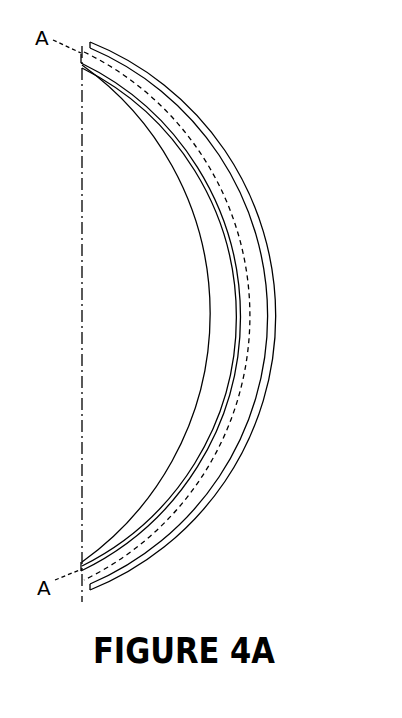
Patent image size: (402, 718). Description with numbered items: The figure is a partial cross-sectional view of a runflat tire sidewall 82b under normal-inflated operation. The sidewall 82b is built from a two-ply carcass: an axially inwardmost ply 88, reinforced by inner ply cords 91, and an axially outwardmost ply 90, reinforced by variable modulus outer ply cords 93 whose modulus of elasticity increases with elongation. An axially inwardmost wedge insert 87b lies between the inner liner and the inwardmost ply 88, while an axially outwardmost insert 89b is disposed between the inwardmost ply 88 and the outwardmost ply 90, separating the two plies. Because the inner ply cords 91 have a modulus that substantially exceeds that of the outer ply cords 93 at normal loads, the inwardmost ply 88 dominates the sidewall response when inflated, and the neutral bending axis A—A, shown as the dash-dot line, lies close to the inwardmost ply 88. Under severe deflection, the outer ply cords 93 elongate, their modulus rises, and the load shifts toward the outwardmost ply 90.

The sidewall 82b is at (215, 316).
The axially inwardmost sidewall wedge insert 87b is at (218, 262).
The axially inwardmost ply 88 is at (192, 162).
The axially outwardmost insert 89b is at (256, 350).
The axially outwardmost ply 90 is at (217, 147).
The inner ply cords 91 is at (215, 205).
The outer ply cord 93 is at (238, 175).